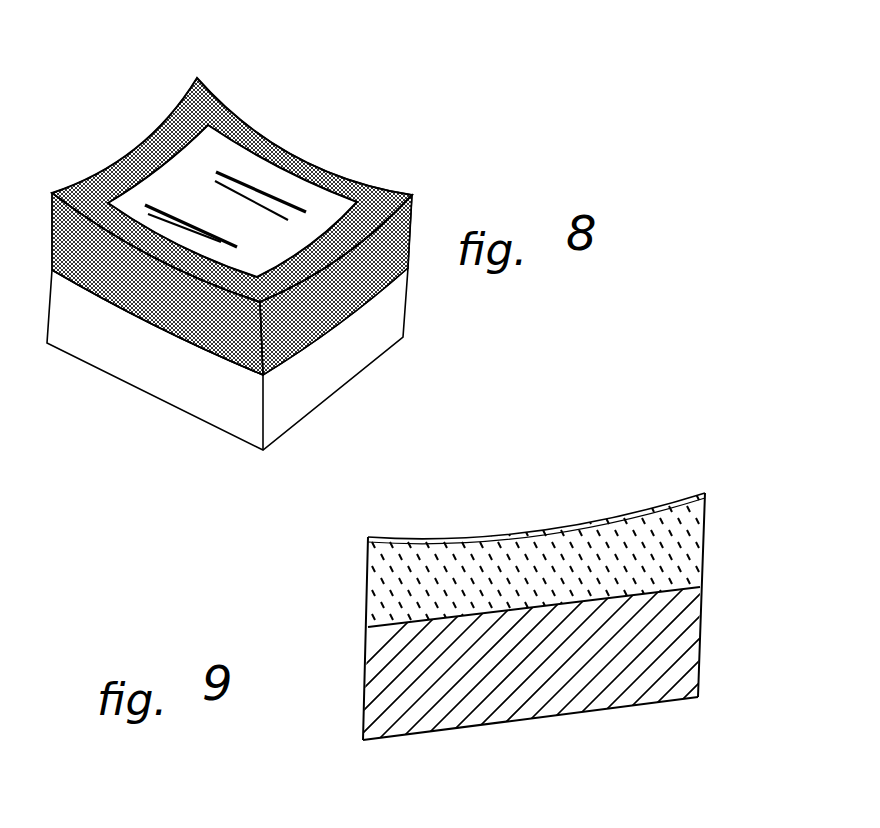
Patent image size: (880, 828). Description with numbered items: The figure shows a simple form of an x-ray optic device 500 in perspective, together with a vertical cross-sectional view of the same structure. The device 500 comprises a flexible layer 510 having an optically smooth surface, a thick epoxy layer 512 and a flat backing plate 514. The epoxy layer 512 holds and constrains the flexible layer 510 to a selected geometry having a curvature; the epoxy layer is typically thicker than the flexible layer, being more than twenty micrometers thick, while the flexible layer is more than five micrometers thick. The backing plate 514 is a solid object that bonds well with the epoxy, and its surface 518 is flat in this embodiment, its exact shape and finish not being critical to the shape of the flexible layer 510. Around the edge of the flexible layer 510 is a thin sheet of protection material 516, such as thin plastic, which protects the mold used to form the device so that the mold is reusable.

In FIG. 8, the device 500 is at (355, 122).
In FIG. 9, the device 500 is at (643, 433).
In FIG. 8, the flexible layer 510 is at (247, 178).
In FIG. 9, the flexible layer 510 is at (532, 532).
In FIG. 8, the epoxy layer 512 is at (50, 220).
In FIG. 9, the epoxy layer 512 is at (387, 585).
In FIG. 8, the backing plate 514 is at (137, 375).
In FIG. 9, the backing plate 514 is at (607, 690).
In FIG. 8, the protection material 516 is at (215, 93).
In FIG. 9, the protection material 516 is at (417, 538).
In FIG. 8, the surface of the backing plate 518 is at (78, 283).
In FIG. 9, the surface of the backing plate 518 is at (405, 628).